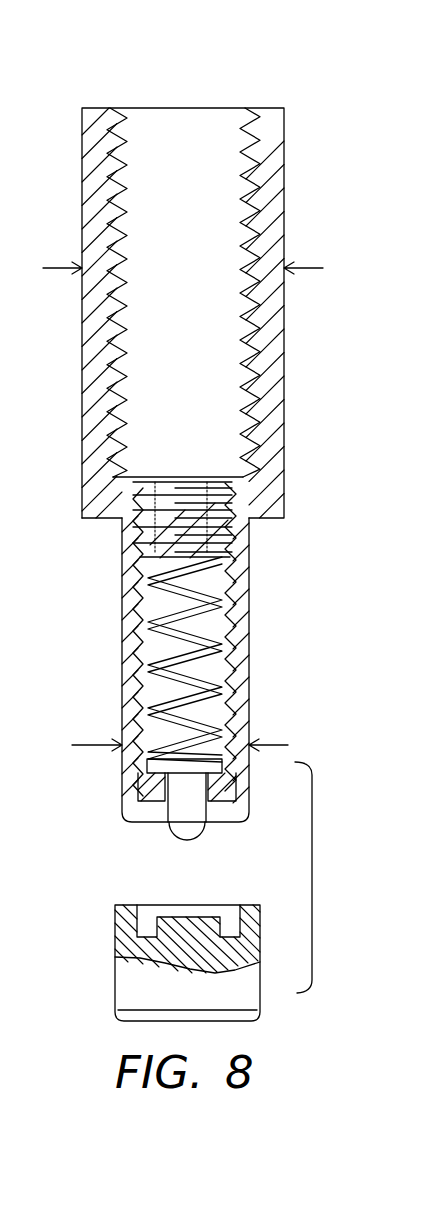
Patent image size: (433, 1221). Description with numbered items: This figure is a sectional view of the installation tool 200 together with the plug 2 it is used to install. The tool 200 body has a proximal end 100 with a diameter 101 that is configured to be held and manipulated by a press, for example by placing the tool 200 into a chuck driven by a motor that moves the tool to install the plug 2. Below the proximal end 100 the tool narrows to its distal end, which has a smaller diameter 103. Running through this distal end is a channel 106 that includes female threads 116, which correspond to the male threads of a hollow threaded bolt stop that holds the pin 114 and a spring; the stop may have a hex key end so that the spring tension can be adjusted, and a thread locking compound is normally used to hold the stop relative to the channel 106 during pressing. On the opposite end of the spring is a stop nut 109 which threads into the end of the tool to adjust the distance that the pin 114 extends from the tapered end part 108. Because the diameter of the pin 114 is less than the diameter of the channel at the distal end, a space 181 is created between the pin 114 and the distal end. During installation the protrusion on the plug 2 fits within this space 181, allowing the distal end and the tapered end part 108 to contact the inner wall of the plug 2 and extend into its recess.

The tool 200 is at (159, 72).
The proximal end 100 is at (269, 107).
The diameter 101 is at (62, 262).
The diameter 103 is at (100, 744).
The female threads 116 is at (135, 560).
The channel 106 is at (126, 658).
The stop nut 109 is at (125, 800).
The end part 108 is at (140, 828).
The pin 114 is at (175, 822).
The space 181 is at (212, 812).
The plug 2 is at (98, 992).